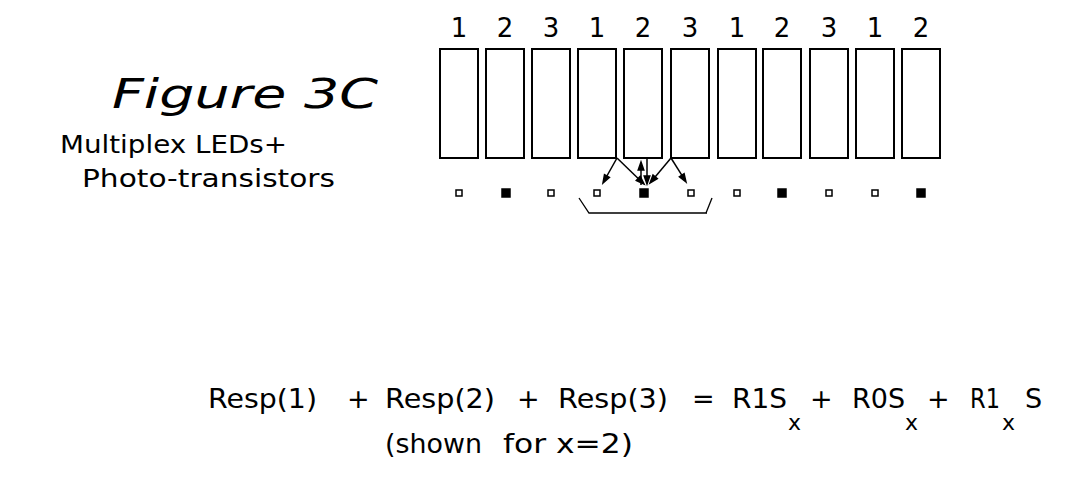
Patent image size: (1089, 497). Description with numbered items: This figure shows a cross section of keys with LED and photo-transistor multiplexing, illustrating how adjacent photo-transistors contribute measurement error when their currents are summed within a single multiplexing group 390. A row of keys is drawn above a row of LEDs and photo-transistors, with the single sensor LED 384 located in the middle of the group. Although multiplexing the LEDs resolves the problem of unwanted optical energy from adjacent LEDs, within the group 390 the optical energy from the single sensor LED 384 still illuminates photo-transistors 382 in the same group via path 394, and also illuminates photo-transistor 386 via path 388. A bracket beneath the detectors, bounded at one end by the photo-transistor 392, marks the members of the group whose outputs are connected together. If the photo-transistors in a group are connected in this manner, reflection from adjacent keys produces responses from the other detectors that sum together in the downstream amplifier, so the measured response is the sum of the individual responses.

The photo-transistors 382 is at (591, 214).
The single sensor LED 384 is at (644, 197).
The photo-transistor 386 is at (658, 173).
The path 388 is at (687, 171).
The multiplexing group 390 is at (698, 215).
The phototransistor 392 is at (692, 197).
The path 394 is at (599, 171).